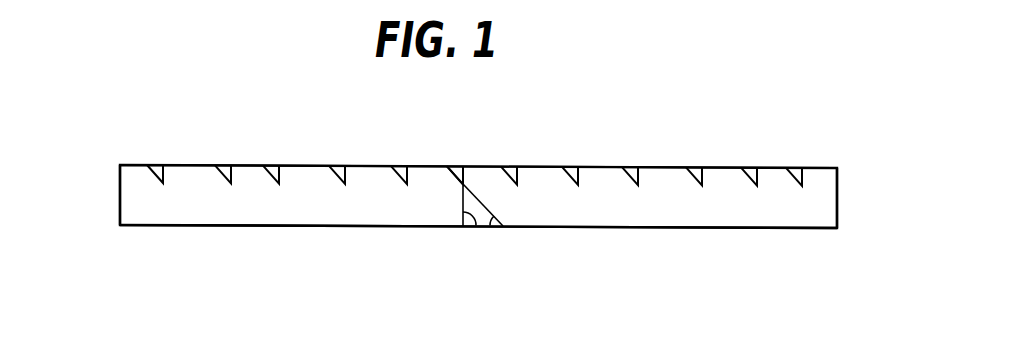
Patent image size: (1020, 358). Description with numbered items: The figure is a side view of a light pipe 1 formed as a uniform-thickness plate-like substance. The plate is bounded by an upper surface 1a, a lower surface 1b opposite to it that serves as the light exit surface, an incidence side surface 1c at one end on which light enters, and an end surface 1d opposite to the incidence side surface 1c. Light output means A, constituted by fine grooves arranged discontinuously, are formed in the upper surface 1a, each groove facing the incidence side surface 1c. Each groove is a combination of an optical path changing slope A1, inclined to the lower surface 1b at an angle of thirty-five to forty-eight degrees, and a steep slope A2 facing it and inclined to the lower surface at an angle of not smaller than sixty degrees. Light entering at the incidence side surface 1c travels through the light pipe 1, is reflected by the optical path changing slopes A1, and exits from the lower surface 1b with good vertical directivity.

The light pipe 1 is at (730, 167).
The upper surface 1a is at (600, 167).
The lower surface 1b is at (625, 228).
The incidence side surface 1c is at (120, 192).
The end surface 1d is at (838, 190).
The light output means A is at (461, 170).
The optical path changing slope A1 is at (462, 179).
The steep slope A2 is at (464, 181).